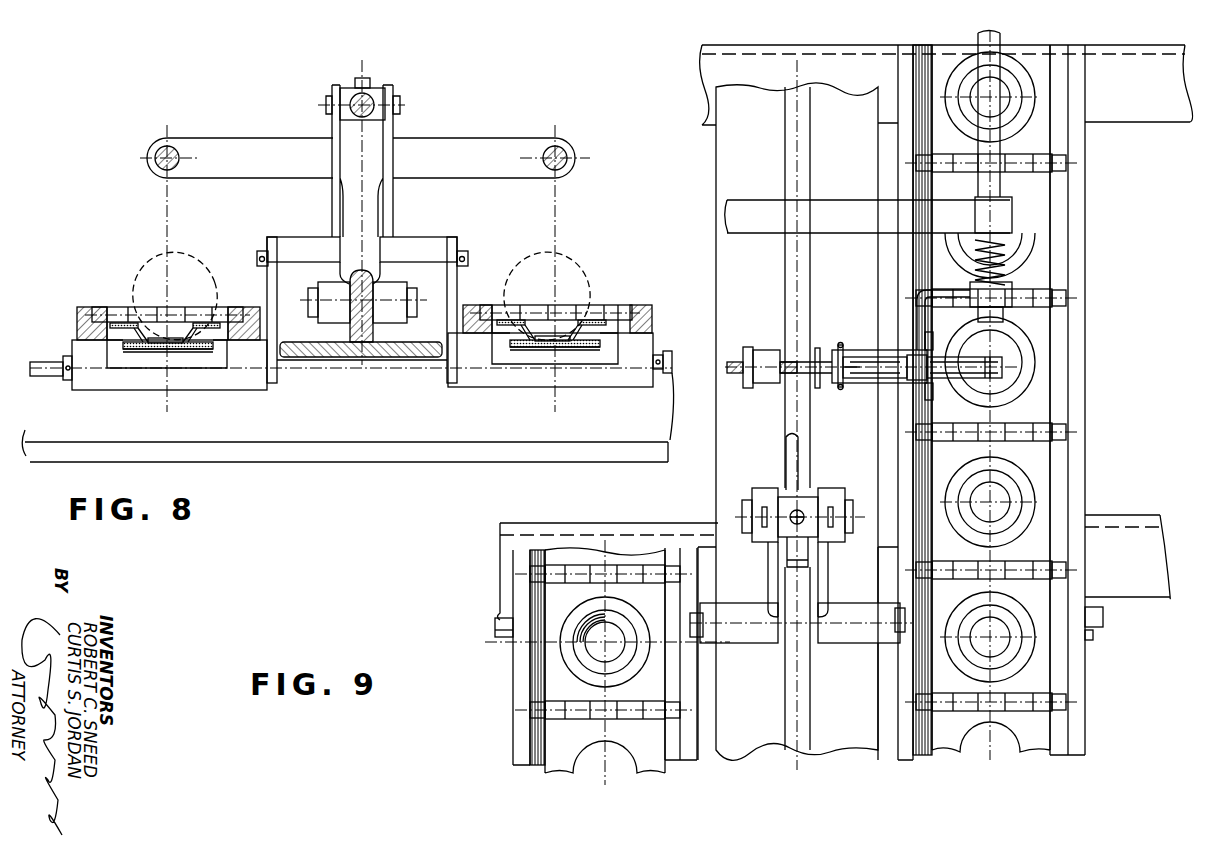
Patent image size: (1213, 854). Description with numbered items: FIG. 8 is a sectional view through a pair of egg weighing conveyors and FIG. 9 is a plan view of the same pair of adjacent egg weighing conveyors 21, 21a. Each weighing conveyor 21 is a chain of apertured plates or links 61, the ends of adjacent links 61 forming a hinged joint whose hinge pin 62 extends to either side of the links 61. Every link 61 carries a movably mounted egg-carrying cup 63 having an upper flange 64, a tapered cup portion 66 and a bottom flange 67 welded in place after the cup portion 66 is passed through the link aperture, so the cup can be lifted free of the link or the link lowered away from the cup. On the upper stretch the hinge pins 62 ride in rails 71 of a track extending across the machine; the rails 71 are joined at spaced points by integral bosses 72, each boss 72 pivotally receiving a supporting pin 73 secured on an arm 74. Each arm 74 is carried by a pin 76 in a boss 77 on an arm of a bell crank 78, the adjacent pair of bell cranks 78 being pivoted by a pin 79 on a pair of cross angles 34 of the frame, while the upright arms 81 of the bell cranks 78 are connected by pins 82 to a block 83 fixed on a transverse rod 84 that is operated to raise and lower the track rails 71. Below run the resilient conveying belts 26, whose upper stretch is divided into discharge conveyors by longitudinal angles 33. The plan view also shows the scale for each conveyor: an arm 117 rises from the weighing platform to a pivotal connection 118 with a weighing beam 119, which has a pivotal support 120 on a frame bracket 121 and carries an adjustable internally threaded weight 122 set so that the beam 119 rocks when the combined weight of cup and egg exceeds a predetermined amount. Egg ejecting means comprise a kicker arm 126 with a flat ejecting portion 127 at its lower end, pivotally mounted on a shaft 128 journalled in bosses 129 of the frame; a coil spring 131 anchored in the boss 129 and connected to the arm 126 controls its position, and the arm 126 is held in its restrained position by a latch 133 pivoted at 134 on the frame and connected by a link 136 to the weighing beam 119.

In FIG. 8, the weighing conveyor 21 is at (113, 292).
In FIG. 9, the weighing conveyor 21 is at (540, 768).
In FIG. 8, the glass sheet workpiece 21a is at (603, 288).
In FIG. 9, the glass sheet workpiece 21a is at (940, 760).
In FIG. 8, the conveying belt 26 is at (431, 452).
In FIG. 8, the longitudinal angle 33 is at (392, 446).
In FIG. 9, the longitudinal angle 33 is at (1108, 108).
In FIG. 8, the cross angle 34 is at (362, 360).
In FIG. 9, the cross angle 34 is at (718, 178).
In FIG. 8, the link 61 is at (217, 322).
In FIG. 9, the link 61 is at (1043, 188).
In FIG. 8, the hinge pin 62 is at (97, 307).
In FIG. 9, the hinge pin 62 is at (1066, 163).
In FIG. 8, the egg-carrying cup 63 is at (140, 352).
In FIG. 9, the egg-carrying cup 63 is at (1040, 211).
In FIG. 8, the upper flange 64 is at (128, 322).
In FIG. 9, the upper flange 64 is at (1030, 230).
In FIG. 8, the tapered cup portion 66 is at (205, 353).
In FIG. 9, the tapered cup portion 66 is at (1012, 515).
In FIG. 8, the bottom flange 67 is at (178, 346).
In FIG. 8, the rail 71 is at (77, 328).
In FIG. 9, the rail 71 is at (1085, 362).
In FIG. 8, the boss 72 is at (112, 390).
In FIG. 9, the boss 72 is at (1093, 636).
In FIG. 8, the supporting pin 73 is at (64, 362).
In FIG. 9, the supporting pin 73 is at (497, 618).
In FIG. 8, the arm 74 is at (270, 292).
In FIG. 9, the arm 74 is at (703, 640).
In FIG. 8, the pin 76 is at (262, 254).
In FIG. 9, the pin 76 is at (900, 630).
In FIG. 8, the boss 77 is at (300, 240).
In FIG. 9, the boss 77 is at (756, 644).
In FIG. 8, the bell crank 78 is at (320, 358).
In FIG. 9, the bell crank 78 is at (763, 581).
In FIG. 8, the pin 79 is at (312, 314).
In FIG. 9, the pin 79 is at (746, 503).
In FIG. 8, the upright arm 81 is at (332, 190).
In FIG. 9, the upright arm 81 is at (770, 488).
In FIG. 8, the pin 82 is at (396, 104).
In FIG. 9, the pin 82 is at (766, 530).
In FIG. 8, the block 83 is at (372, 88).
In FIG. 9, the block 83 is at (808, 497).
In FIG. 8, the rod 84 is at (351, 98).
In FIG. 9, the rod 84 is at (800, 445).
In FIG. 9, the arm 117 is at (946, 380).
In FIG. 9, the pivotal connection 118 is at (996, 385).
In FIG. 9, the weighing beam 119 is at (905, 386).
In FIG. 9, the pivotal support 120 is at (902, 350).
In FIG. 9, the frame bracket 121 is at (868, 381).
In FIG. 9, the adjustable weight 122 is at (754, 350).
In FIG. 9, the kicker arm 126 is at (926, 318).
In FIG. 9, the ejecting portion 127 is at (933, 340).
In FIG. 8, the shaft 128 is at (157, 152).
In FIG. 9, the shaft 128 is at (980, 146).
In FIG. 8, the boss 129 is at (212, 138).
In FIG. 9, the boss 129 is at (856, 202).
In FIG. 9, the coil spring 131 is at (968, 273).
In FIG. 9, the latch 133 is at (818, 348).
In FIG. 9, the pivot 134 is at (818, 390).
In FIG. 9, the link 136 is at (841, 344).